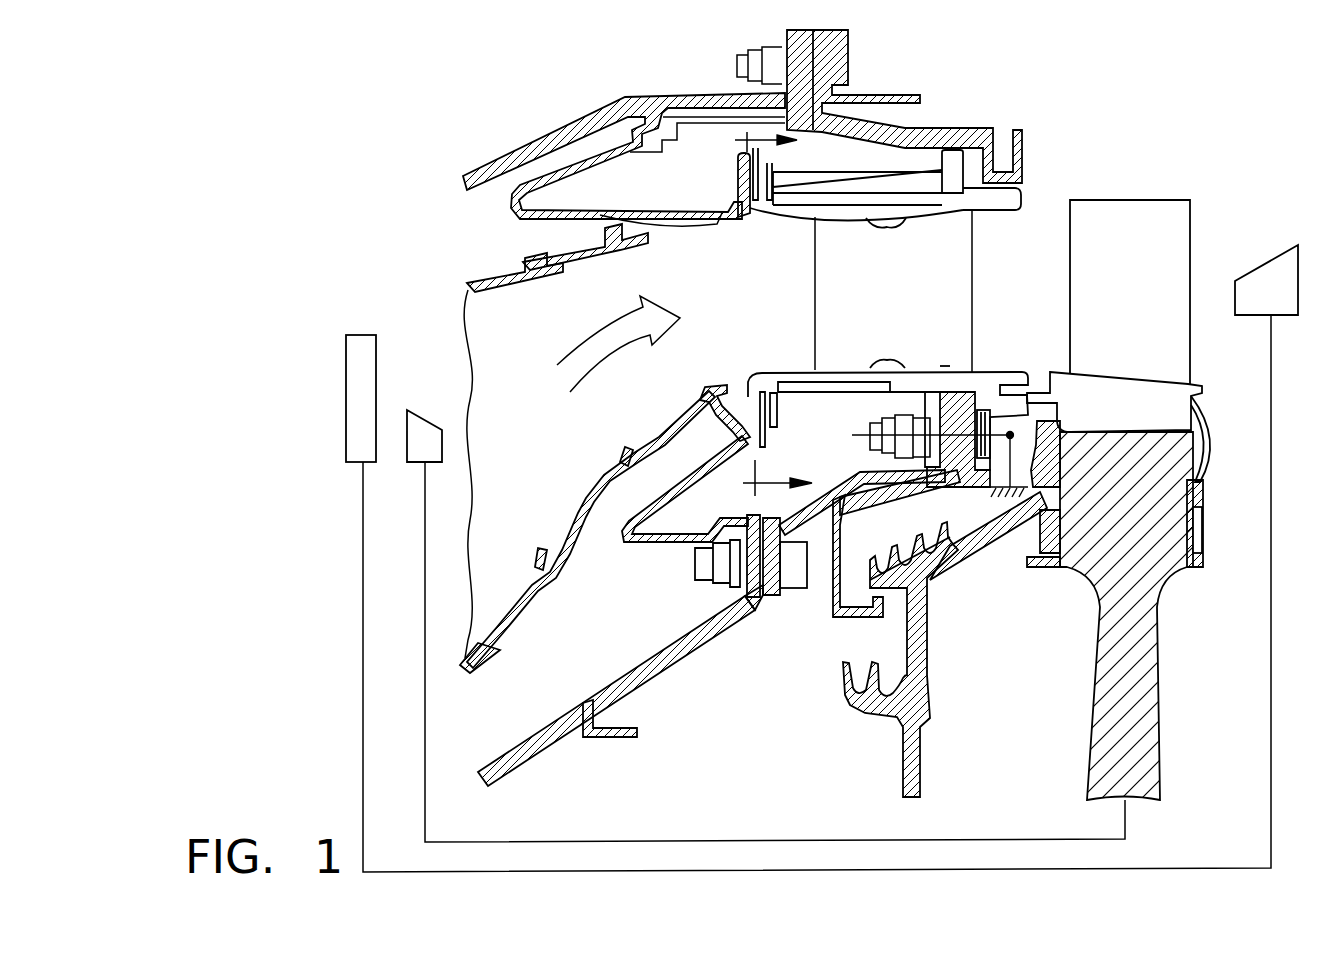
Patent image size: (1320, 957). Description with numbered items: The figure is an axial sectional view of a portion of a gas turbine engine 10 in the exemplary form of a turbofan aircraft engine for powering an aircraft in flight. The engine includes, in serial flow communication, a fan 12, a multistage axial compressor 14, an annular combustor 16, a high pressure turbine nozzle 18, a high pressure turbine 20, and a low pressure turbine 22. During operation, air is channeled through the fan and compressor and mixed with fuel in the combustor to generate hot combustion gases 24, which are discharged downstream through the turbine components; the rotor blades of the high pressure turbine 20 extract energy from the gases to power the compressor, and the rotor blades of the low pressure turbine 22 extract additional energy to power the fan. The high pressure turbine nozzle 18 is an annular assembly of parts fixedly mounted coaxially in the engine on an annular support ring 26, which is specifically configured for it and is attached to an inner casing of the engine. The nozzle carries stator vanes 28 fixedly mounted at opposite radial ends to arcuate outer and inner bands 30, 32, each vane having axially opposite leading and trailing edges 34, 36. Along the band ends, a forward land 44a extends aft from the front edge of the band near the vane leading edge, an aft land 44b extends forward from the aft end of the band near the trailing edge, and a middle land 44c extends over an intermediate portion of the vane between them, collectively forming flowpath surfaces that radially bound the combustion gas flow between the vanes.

The gas turbine engine 10 is at (416, 116).
The fan 12 is at (362, 334).
The multistage axial compressor 14 is at (425, 410).
The annular combustor 16 is at (562, 321).
The high pressure turbine nozzle 18 is at (1052, 160).
The high pressure turbine 20 is at (1140, 287).
The low pressure turbine 22 is at (1282, 306).
The combustion gases 24 is at (590, 365).
The annular support ring 26 is at (833, 487).
The stator vane 28 is at (897, 301).
The outer band 30 is at (988, 211).
The inner band 32 is at (988, 366).
The leading edge 34 is at (815, 282).
The trailing edge 36 is at (975, 291).
The forward land 44a is at (815, 222).
The aft land 44b is at (948, 218).
The middle land 44c is at (885, 229).